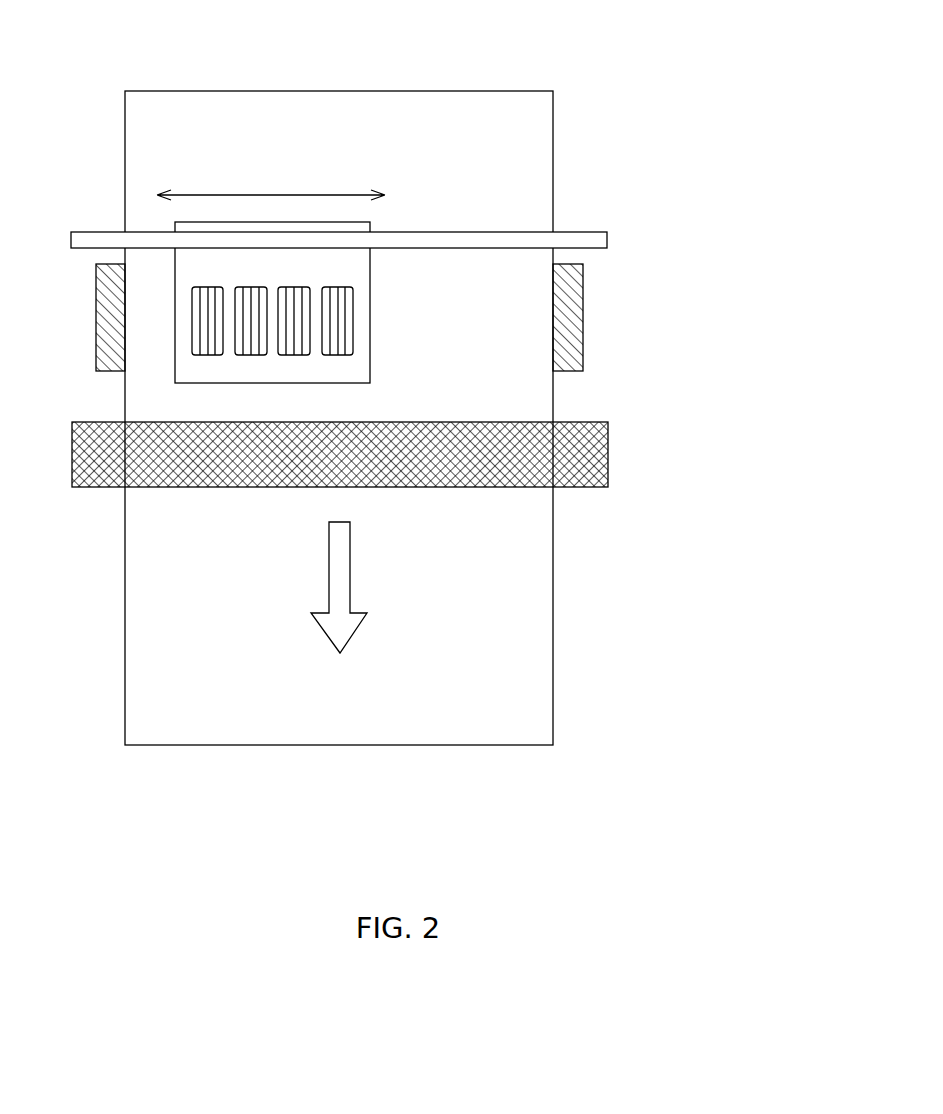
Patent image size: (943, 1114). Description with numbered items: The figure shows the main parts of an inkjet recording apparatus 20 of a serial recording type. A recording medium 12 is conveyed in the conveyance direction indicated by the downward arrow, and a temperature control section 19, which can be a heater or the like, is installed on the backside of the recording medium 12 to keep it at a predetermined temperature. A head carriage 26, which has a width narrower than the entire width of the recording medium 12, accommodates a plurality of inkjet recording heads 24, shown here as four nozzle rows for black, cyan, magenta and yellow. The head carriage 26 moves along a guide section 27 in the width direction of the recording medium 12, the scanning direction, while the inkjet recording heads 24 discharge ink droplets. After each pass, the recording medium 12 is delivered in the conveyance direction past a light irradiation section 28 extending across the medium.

The recording medium 12 is at (450, 118).
The temperature control section 19 is at (583, 315).
The inkjet recording apparatus 20 is at (811, 48).
The inkjet recording head 24 is at (198, 322).
The head carriage 26 is at (198, 375).
The guide section 27 is at (582, 240).
The light irradiation section 28 is at (577, 482).